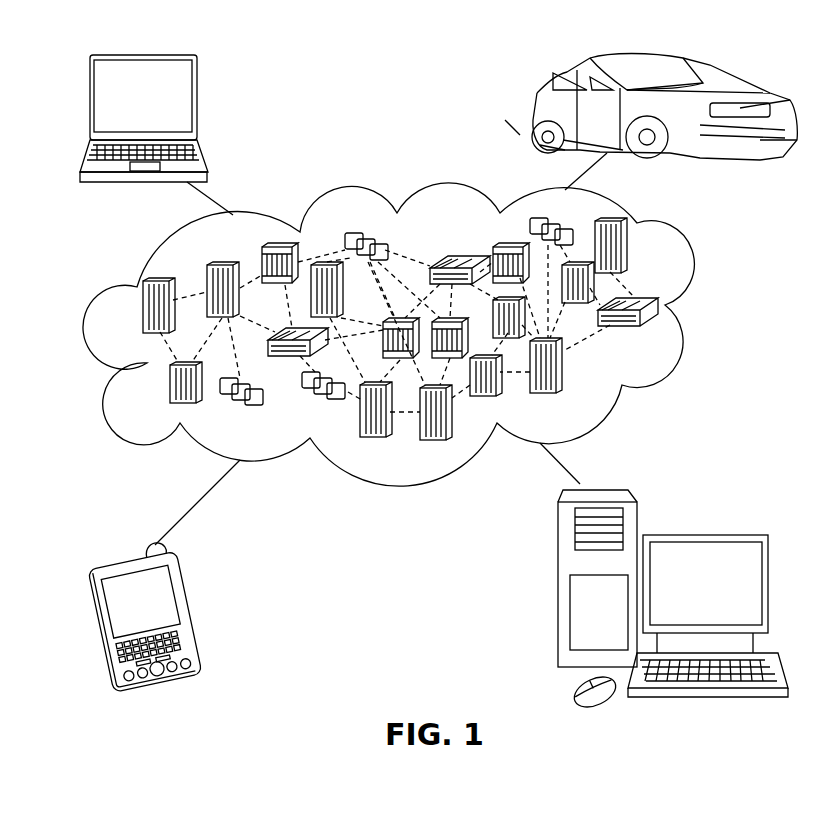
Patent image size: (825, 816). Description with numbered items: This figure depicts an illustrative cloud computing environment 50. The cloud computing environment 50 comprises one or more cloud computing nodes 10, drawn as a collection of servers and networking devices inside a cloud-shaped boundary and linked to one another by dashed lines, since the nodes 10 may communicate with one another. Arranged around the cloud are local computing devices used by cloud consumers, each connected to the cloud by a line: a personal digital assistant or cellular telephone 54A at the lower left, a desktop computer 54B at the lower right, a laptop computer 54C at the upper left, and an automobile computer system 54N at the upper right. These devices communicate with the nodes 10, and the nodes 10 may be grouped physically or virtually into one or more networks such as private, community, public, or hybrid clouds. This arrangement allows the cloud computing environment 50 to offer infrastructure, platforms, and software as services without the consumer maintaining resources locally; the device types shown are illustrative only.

The cloud computing nodes 10 is at (415, 334).
The cloud computing environment 50 is at (700, 304).
The personal digital assistant or cellular telephone 54A is at (196, 608).
The desktop computer 54B is at (703, 534).
The laptop computer 54C is at (197, 101).
The automobile computer system 54N is at (533, 112).